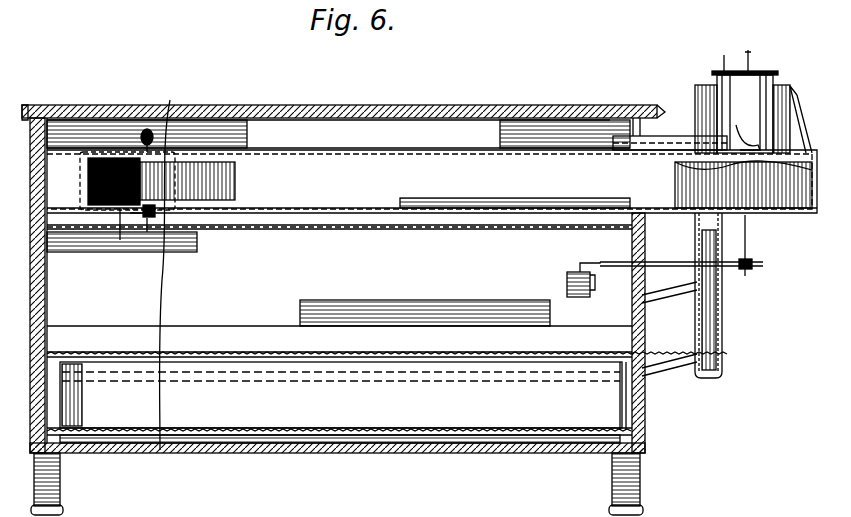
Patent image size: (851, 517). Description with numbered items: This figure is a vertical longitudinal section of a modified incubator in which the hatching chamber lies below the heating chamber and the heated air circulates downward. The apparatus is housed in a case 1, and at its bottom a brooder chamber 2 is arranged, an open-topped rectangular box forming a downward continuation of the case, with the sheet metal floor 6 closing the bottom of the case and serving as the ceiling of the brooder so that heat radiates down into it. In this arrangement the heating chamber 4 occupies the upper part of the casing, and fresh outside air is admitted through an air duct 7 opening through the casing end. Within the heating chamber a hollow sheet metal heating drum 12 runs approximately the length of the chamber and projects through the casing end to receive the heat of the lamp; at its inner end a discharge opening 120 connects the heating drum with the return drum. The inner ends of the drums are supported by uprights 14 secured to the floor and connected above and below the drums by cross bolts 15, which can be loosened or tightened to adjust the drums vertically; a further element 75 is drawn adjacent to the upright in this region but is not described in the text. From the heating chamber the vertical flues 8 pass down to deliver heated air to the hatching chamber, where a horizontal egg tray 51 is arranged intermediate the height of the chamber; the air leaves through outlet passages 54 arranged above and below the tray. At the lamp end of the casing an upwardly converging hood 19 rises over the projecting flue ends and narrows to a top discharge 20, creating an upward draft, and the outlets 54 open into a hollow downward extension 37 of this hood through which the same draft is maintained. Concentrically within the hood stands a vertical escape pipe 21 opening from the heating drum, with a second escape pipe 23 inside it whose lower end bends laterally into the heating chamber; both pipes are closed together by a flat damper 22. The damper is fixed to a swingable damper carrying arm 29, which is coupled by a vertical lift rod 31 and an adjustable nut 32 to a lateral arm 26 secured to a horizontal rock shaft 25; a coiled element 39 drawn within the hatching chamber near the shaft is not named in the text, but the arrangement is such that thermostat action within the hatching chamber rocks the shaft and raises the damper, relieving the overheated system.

The case 1 is at (452, 113).
The brooder chamber 2 is at (380, 448).
The heating chamber 4 is at (338, 134).
The floor 6 is at (472, 229).
The air duct 7 is at (632, 215).
The vertical flue 8 is at (50, 272).
The heating drum 12 is at (432, 181).
The upright 14 is at (178, 118).
The cross bolt 15 is at (170, 209).
The hood 19 is at (800, 130).
The top discharge 20 is at (705, 88).
The escape pipe 21 is at (776, 88).
The damper 22 is at (745, 91).
The escape pipe 23 is at (743, 184).
The rock shaft 25 is at (652, 264).
The lateral arm 26 is at (745, 277).
The damper carrying arm 29 is at (752, 56).
The lift rod 31 is at (750, 244).
The adjustable nut 32 is at (754, 266).
The downward extension 37 is at (722, 365).
The coil 39 is at (575, 297).
The egg tray 51 is at (280, 325).
The outlet passage 54 is at (666, 298).
The bulb 75 is at (149, 128).
The discharge opening 120 is at (121, 245).